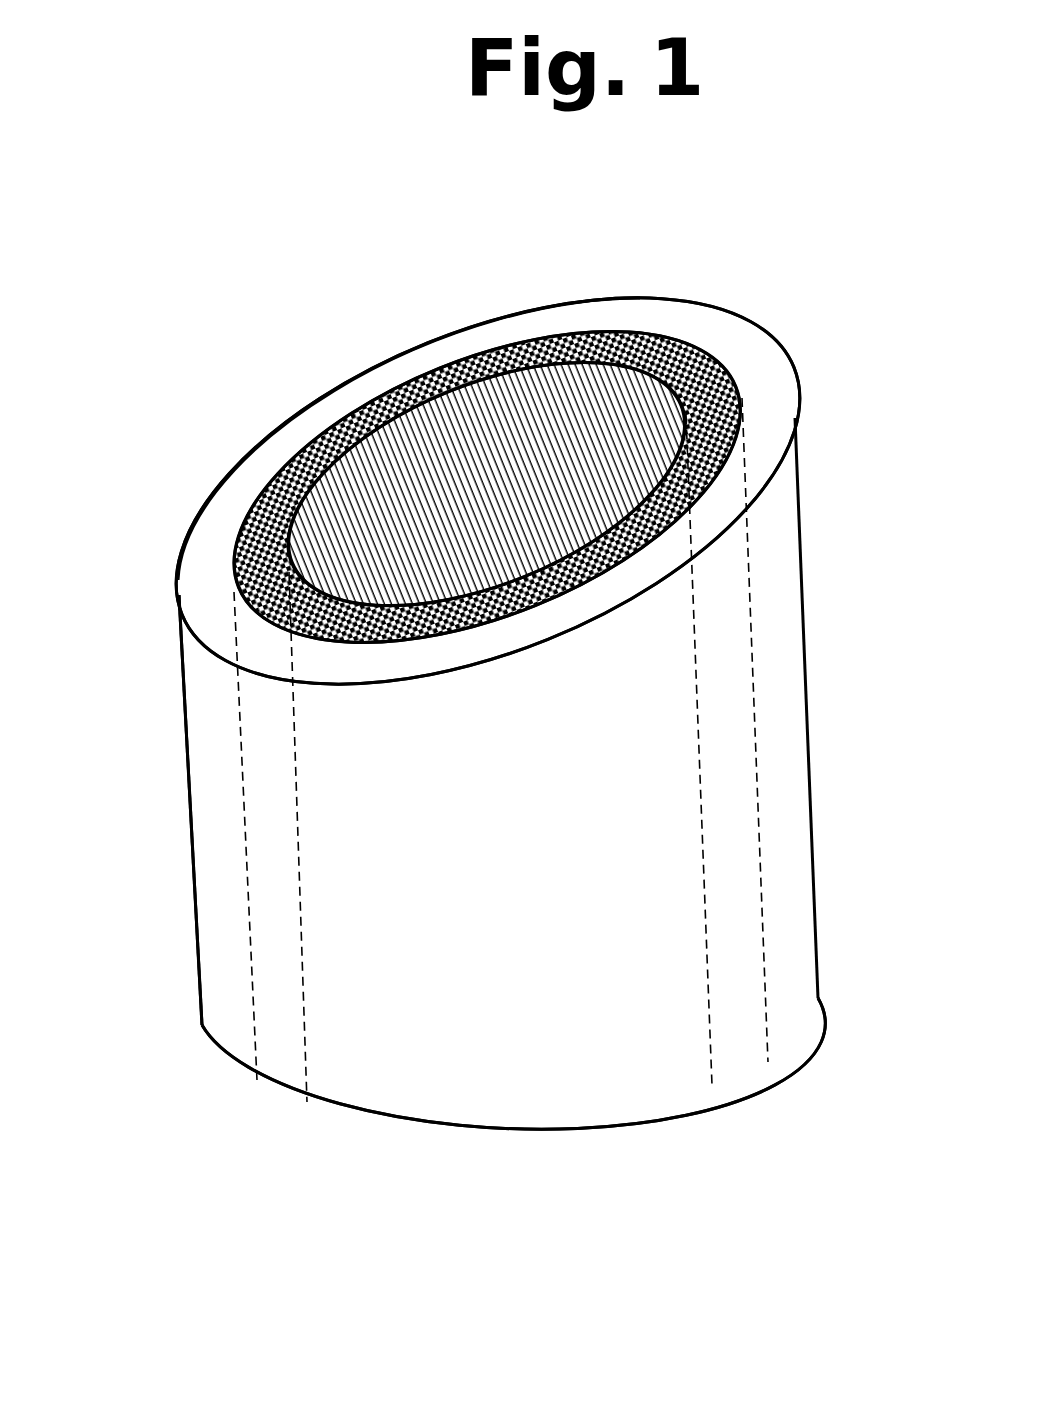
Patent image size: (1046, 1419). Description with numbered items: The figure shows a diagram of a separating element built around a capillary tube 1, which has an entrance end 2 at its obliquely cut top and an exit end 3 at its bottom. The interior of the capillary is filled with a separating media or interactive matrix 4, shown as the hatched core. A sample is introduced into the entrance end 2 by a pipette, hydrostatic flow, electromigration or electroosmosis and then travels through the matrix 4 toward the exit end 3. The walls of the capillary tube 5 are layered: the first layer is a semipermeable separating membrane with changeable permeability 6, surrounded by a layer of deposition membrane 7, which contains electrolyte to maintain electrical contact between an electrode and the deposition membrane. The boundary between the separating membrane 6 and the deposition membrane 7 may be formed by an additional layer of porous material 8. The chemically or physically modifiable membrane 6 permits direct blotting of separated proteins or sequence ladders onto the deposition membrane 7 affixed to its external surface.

The capillary tube 1 is at (511, 674).
The entrance end 2 is at (488, 487).
The exit end 3 is at (513, 1115).
The separating media or interactive matrix 4 is at (548, 406).
The walls of the capillary tube 5 is at (200, 715).
The semipermeable separating membrane with changeable permeability 6 is at (280, 494).
The deposition membrane 7 is at (315, 408).
The layer of porous material 8 is at (386, 383).